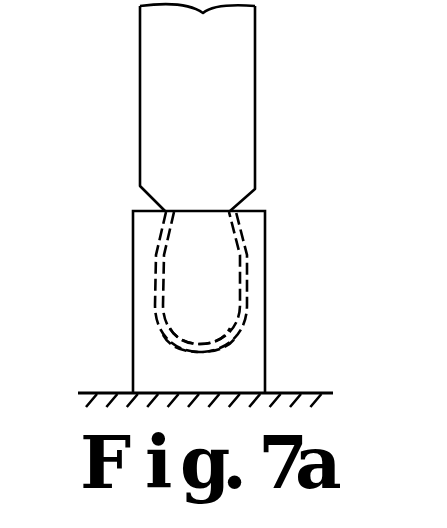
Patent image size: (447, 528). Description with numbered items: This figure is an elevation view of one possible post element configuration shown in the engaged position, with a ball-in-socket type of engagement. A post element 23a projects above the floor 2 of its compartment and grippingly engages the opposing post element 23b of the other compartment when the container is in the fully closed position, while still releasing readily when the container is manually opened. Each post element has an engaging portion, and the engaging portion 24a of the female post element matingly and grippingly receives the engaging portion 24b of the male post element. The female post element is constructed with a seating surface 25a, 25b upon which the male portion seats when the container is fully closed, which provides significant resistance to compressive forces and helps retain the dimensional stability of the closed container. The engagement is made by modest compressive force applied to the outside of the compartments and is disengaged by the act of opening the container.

The floor 2 is at (288, 393).
The post element 23a is at (265, 313).
The post element 23b is at (255, 132).
The engaging portion 24a is at (158, 268).
The engaging portion 24b is at (172, 231).
The seating surface 25a is at (200, 353).
The seating surface 25b is at (190, 342).